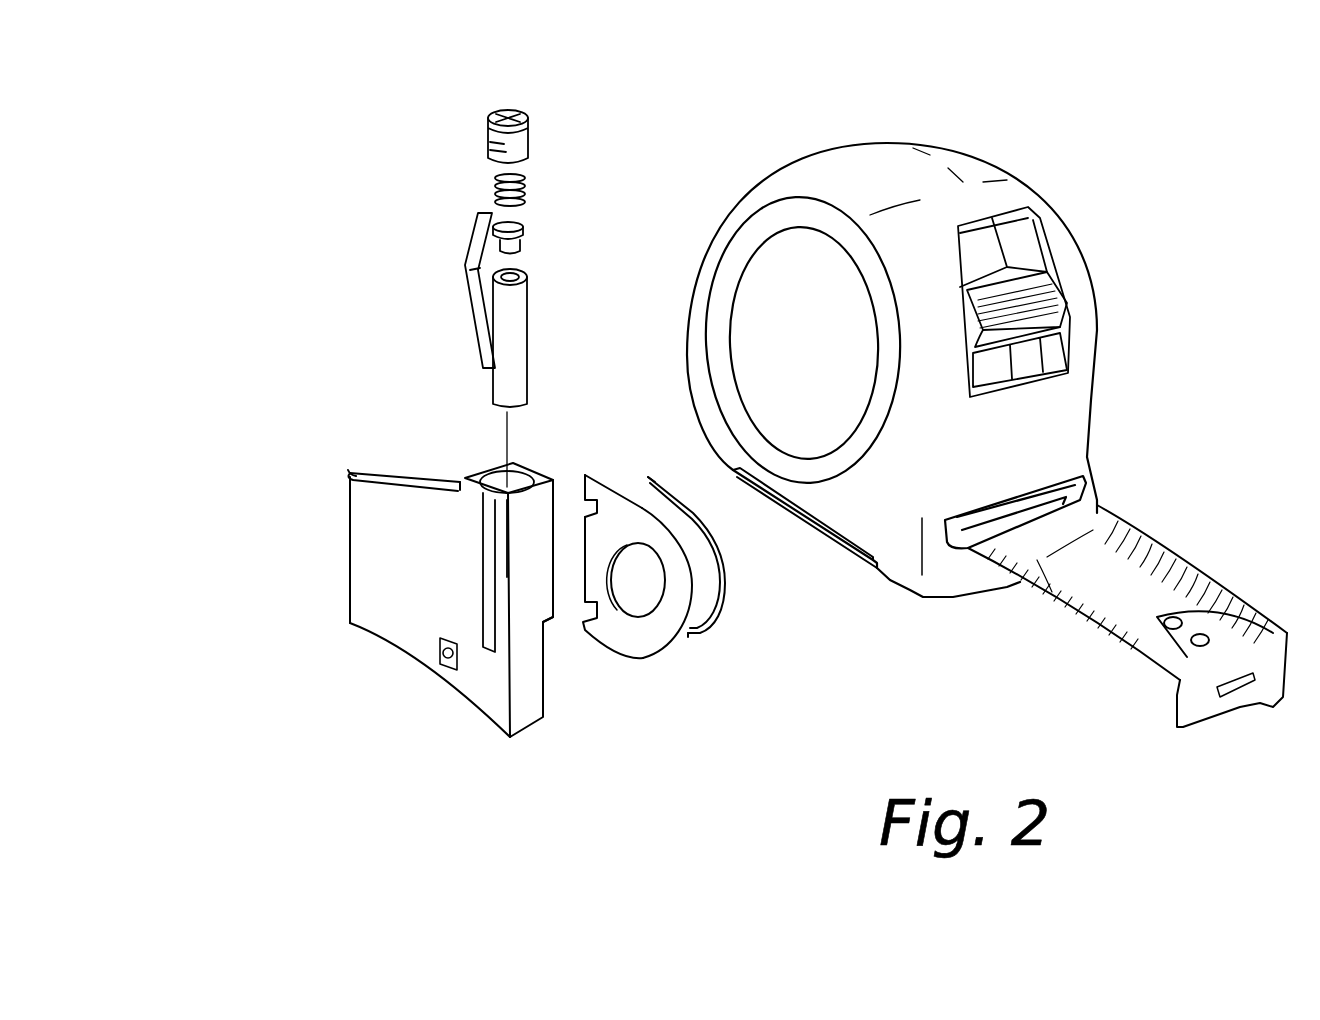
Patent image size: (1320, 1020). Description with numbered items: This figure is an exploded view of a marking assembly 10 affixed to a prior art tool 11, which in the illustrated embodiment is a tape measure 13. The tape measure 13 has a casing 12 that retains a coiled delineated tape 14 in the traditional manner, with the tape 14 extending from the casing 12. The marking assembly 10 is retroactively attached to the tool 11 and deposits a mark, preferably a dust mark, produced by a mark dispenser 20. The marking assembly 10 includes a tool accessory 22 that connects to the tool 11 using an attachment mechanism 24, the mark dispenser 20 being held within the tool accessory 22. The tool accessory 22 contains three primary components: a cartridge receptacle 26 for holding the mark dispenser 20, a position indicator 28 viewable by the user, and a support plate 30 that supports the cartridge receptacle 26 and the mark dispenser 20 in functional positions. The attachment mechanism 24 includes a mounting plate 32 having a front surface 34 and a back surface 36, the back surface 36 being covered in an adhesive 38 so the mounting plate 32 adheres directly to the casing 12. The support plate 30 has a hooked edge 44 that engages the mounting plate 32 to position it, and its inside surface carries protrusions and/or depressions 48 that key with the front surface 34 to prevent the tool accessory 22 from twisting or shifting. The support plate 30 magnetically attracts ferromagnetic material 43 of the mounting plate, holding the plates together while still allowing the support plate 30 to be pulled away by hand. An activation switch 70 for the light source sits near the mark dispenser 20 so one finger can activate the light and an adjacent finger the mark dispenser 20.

The marking assembly 10 is at (582, 367).
The tool 11 is at (1105, 243).
The casing 12 is at (882, 508).
The tape measure 13 is at (960, 160).
The coiled delineated tape 14 is at (1173, 573).
The mark dispenser 20 is at (537, 117).
The tool accessory 22 is at (468, 677).
The attachment mechanism 24 is at (600, 743).
The cartridge receptacle 26 is at (490, 463).
The position indicator 28 is at (548, 622).
The support plate 30 is at (397, 552).
The mounting plate 32 is at (662, 657).
The front surface 34 is at (664, 627).
The back surface 36 is at (632, 493).
The adhesive 38 is at (720, 578).
The ferromagnetic material 43 is at (635, 578).
The hooked edge 44 is at (348, 470).
The protrusions and/or depressions 48 is at (585, 510).
The activation switch 70 is at (440, 653).